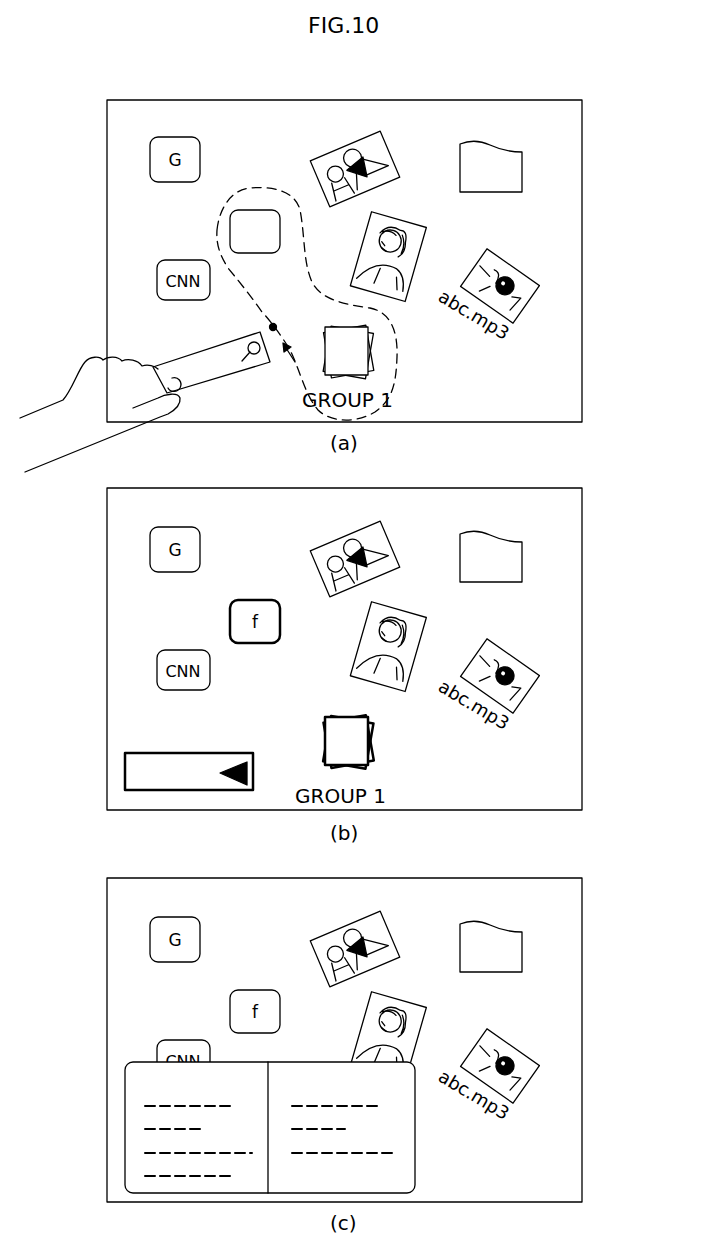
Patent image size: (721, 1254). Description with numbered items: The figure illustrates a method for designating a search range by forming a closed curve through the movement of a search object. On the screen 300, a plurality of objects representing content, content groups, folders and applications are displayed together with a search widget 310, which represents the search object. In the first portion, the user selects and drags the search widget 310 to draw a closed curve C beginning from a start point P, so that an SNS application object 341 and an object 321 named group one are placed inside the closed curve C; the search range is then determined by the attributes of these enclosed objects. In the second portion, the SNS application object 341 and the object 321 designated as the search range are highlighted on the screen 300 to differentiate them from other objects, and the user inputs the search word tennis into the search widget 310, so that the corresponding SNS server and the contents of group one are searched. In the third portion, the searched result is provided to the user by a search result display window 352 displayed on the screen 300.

The screen 300 is at (582, 218).
The SNS application object 341 is at (254, 210).
The object "group 1" 321 is at (368, 355).
The search widget 310 is at (243, 372).
The search result display window 352 is at (125, 1127).
The start point P is at (281, 331).
The closed curve C is at (393, 383).